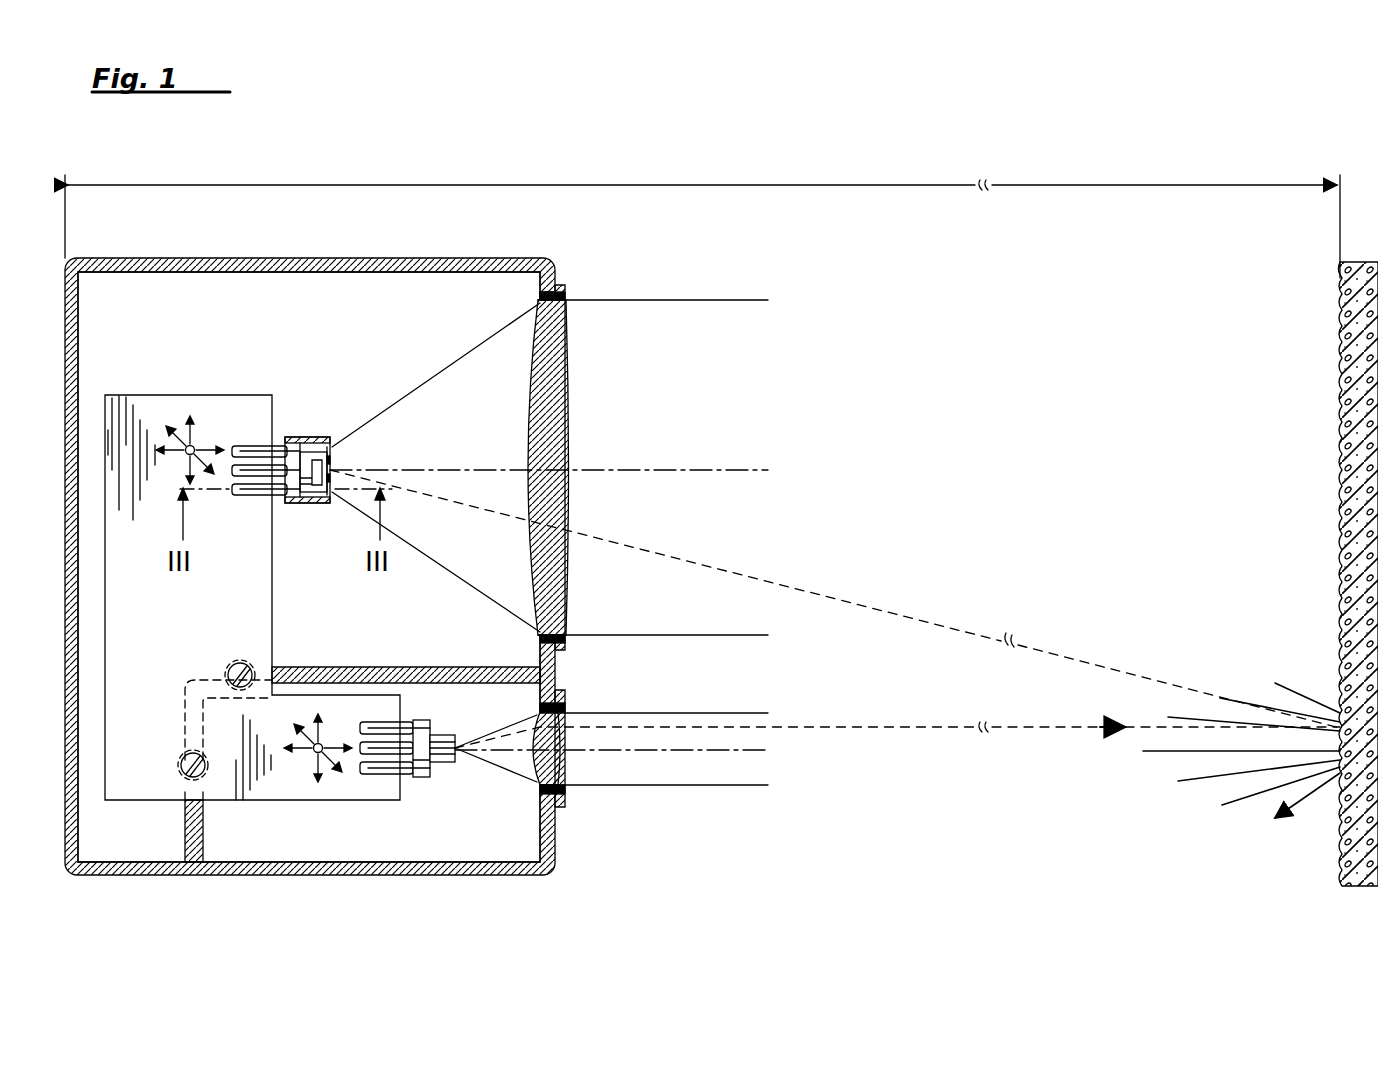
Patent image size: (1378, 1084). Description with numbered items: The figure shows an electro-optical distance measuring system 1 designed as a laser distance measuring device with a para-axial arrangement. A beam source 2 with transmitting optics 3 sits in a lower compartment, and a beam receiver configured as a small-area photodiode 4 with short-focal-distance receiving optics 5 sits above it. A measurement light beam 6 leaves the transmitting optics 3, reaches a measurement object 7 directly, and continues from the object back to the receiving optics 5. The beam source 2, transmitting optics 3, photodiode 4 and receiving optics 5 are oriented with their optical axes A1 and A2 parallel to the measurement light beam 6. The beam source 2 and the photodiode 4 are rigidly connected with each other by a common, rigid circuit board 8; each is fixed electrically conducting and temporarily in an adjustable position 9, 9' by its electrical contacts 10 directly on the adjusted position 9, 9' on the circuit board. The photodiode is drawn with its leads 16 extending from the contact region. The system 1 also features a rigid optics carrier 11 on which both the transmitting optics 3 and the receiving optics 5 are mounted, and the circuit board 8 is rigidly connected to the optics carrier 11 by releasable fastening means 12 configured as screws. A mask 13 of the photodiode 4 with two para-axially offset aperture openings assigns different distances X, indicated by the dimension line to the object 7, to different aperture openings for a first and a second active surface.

The electro-optical distance measuring system 1 is at (557, 872).
The beam source 2 is at (420, 775).
The transmitting optics 3 is at (553, 762).
The small-area photodiode 4 is at (298, 437).
The receiving optics 5 is at (557, 398).
The measurement light beam 6 is at (978, 632).
The measurement object 7 is at (1342, 638).
The circuit board 8 is at (243, 597).
The adjusted position 9 is at (190, 402).
The adjusted position 9' is at (311, 783).
The electrical contacts 10 is at (264, 495).
The optics carrier 11 is at (137, 876).
The releasable fastening means 12 is at (233, 668).
The mask 13 is at (333, 443).
The leads 16 is at (258, 445).
The distance X is at (695, 185).
The optical axis A1 is at (744, 752).
The optical axis A2 is at (713, 468).